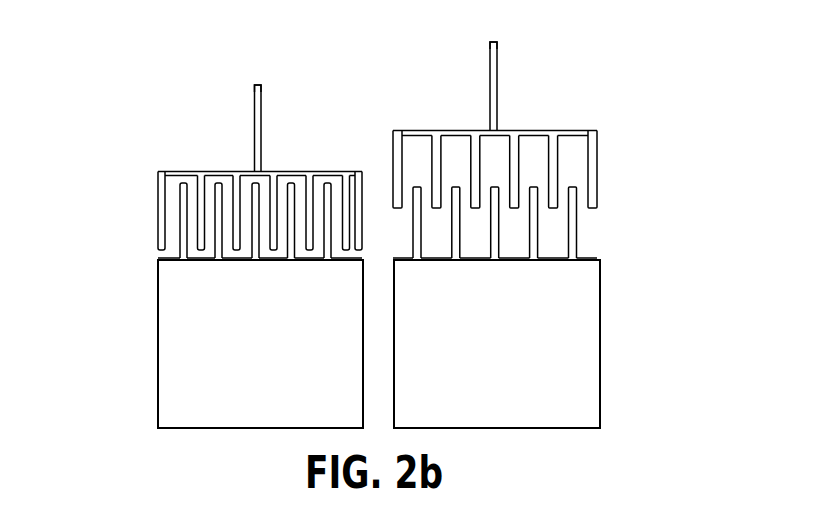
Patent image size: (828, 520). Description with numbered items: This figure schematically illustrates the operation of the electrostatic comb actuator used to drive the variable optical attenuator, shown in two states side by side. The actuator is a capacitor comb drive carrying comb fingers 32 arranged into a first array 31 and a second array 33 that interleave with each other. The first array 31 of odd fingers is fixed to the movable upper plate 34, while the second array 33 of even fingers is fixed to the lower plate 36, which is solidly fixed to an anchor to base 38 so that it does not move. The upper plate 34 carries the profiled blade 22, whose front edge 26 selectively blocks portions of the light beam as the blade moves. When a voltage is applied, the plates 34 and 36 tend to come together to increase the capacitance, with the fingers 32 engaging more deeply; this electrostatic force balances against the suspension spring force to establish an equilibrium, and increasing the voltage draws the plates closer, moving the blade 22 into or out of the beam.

The blade 22 is at (254, 117).
The front edge 26 is at (257, 84).
The first array 31 is at (594, 164).
The comb fingers 32 is at (158, 207).
The second array 33 is at (577, 232).
The upper plate 34 is at (160, 171).
The lower plate 36 is at (158, 256).
The anchor to base 38 is at (158, 381).